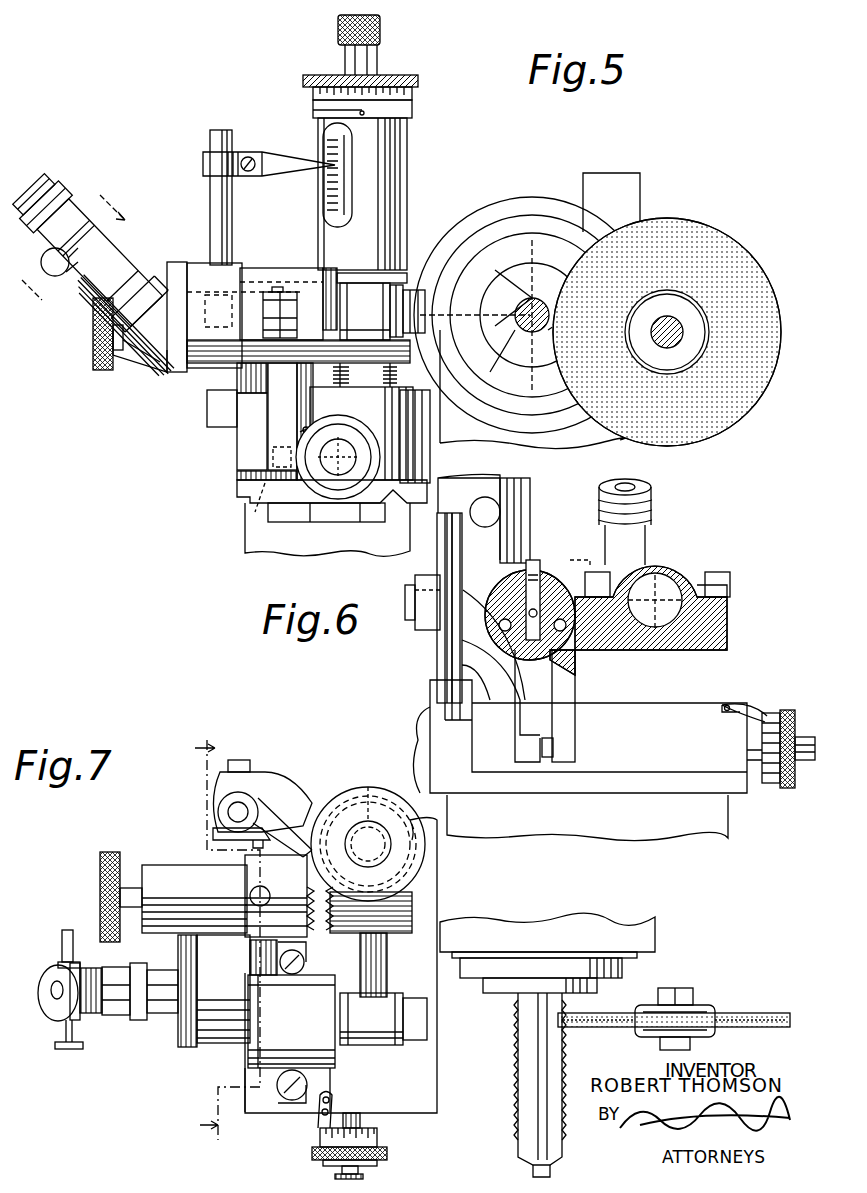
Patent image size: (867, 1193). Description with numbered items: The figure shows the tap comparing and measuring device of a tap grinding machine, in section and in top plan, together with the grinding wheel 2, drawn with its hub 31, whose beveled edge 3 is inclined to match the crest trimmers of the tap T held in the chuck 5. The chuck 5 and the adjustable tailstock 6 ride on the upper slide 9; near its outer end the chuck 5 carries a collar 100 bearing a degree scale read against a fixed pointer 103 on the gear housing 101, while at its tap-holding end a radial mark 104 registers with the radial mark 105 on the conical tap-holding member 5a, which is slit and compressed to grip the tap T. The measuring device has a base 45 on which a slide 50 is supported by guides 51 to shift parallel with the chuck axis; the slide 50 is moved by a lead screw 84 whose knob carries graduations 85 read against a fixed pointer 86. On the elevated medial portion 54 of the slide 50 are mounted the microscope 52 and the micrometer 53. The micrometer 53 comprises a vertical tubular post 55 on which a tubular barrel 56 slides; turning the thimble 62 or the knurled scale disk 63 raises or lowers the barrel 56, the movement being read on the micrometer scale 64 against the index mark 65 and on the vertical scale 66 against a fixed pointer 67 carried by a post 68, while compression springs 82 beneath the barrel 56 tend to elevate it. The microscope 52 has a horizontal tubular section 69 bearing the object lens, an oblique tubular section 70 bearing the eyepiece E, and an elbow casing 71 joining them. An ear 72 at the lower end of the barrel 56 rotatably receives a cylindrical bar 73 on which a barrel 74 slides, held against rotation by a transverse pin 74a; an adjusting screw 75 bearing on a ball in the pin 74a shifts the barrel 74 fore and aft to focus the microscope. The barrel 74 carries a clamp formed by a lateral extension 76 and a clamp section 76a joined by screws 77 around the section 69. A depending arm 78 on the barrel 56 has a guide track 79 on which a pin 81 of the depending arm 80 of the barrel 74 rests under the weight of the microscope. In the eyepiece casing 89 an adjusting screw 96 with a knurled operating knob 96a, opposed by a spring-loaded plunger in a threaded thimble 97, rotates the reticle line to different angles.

In FIG. 5, the abrasive disk or wheel 2 is at (657, 225).
In FIG. 7, the abrasive disk or wheel 2 is at (735, 1014).
In FIG. 7, the beveled edge 3 is at (786, 1014).
In FIG. 5, the tap-supporting chuck 5 is at (512, 255).
In FIG. 6, the tap-supporting chuck 5 is at (530, 490).
In FIG. 7, the tap-supporting chuck 5 is at (630, 950).
In FIG. 7, the conical tap-holding member 5a is at (598, 988).
In FIG. 7, the adjustable tailstock 6 is at (227, 938).
In FIG. 5, the upper slide 9 is at (78, 252).
In FIG. 5, the wheel hub 31 is at (672, 330).
In FIG. 7, the wheel hub 31 is at (690, 1037).
In FIG. 5, the base 45 is at (274, 542).
In FIG. 6, the base 45 is at (728, 800).
In FIG. 5, the slide 50 is at (240, 488).
In FIG. 6, the slide 50 is at (733, 790).
In FIG. 7, the slide 50 is at (430, 1103).
In FIG. 5, the guides 51 is at (380, 535).
In FIG. 5, the microscope 52 is at (180, 262).
In FIG. 6, the microscope 52 is at (655, 512).
In FIG. 5, the micrometer 53 is at (420, 128).
In FIG. 5, the elevated medial portion 54 is at (418, 445).
In FIG. 5, the vertical tubular post 55 is at (365, 378).
In FIG. 6, the tubular barrel 56 is at (530, 530).
In FIG. 7, the tubular barrel 56 is at (379, 785).
In FIG. 5, the thimble 62 is at (378, 54).
In FIG. 7, the thimble 62 is at (372, 840).
In FIG. 5, the knurled scale disk 63 is at (305, 78).
In FIG. 5, the micrometer scale 64 is at (314, 93).
In FIG. 7, the micrometer scale 64 is at (352, 795).
In FIG. 5, the index mark 65 is at (358, 110).
In FIG. 5, the vertical scale 66 is at (322, 186).
In FIG. 5, the fixed pointer 67 is at (278, 160).
In FIG. 7, the fixed pointer 67 is at (282, 830).
In FIG. 5, the post 68 is at (222, 220).
In FIG. 7, the post 68 is at (245, 800).
In FIG. 5, the tubular section 69 is at (382, 311).
In FIG. 6, the tubular section 69 is at (680, 625).
In FIG. 7, the tubular section 69 is at (383, 1019).
In FIG. 5, the oblique tubular section 70 is at (118, 248).
In FIG. 7, the oblique tubular section 70 is at (128, 1000).
In FIG. 5, the elbow casing 71 is at (200, 362).
In FIG. 7, the elbow casing 71 is at (218, 1030).
In FIG. 5, the ear 72 is at (360, 280).
In FIG. 6, the ear 72 is at (540, 578).
In FIG. 7, the ear 72 is at (412, 905).
In FIG. 6, the cylindrical bar 73 is at (500, 610).
In FIG. 7, the cylindrical bar 73 is at (305, 880).
In FIG. 6, the barrel 74 is at (510, 600).
In FIG. 7, the barrel 74 is at (168, 875).
In FIG. 6, the transverse pin 74a is at (580, 660).
In FIG. 7, the transverse pin 74a is at (255, 890).
In FIG. 5, the adjusting screw 75 is at (124, 350).
In FIG. 7, the adjusting screw 75 is at (128, 888).
In FIG. 5, the lateral extension 76 is at (262, 345).
In FIG. 6, the lateral extension 76 is at (645, 648).
In FIG. 7, the lateral extension 76 is at (258, 957).
In FIG. 5, the clamp section 76a is at (262, 272).
In FIG. 6, the clamp section 76a is at (700, 575).
In FIG. 7, the clamp section 76a is at (272, 1100).
In FIG. 5, the screws 77 is at (282, 290).
In FIG. 6, the screws 77 is at (595, 570).
In FIG. 7, the screws 77 is at (306, 962).
In FIG. 5, the depending arm 78 is at (245, 428).
In FIG. 6, the depending arm 78 is at (515, 692).
In FIG. 5, the guide track 79 is at (250, 460).
In FIG. 6, the guide track 79 is at (540, 742).
In FIG. 5, the depending arm 80 is at (300, 440).
In FIG. 6, the depending arm 80 is at (575, 720).
In FIG. 5, the pin 81 is at (252, 510).
In FIG. 6, the pin 81 is at (555, 745).
In FIG. 5, the compression springs 82 is at (340, 385).
In FIG. 6, the lead screw 84 is at (766, 718).
In FIG. 7, the lead screw 84 is at (350, 1113).
In FIG. 5, the graduations 85 is at (310, 478).
In FIG. 6, the graduations 85 is at (785, 780).
In FIG. 7, the graduations 85 is at (382, 1140).
In FIG. 5, the fixed pointer 86 is at (305, 428).
In FIG. 6, the fixed pointer 86 is at (735, 703).
In FIG. 7, the fixed pointer 86 is at (320, 1130).
In FIG. 5, the casing 89 is at (92, 212).
In FIG. 7, the casing 89 is at (95, 1020).
In FIG. 7, the adjusting screw 96 is at (68, 1050).
In FIG. 5, the knurled operating knob 96a is at (60, 277).
In FIG. 7, the threaded thimble 97 is at (73, 950).
In FIG. 5, the collar 100 is at (488, 208).
In FIG. 5, the gear housing 101 is at (525, 208).
In FIG. 5, the fixed pointer 103 is at (452, 215).
In FIG. 5, the radial mark 104 is at (532, 258).
In FIG. 5, the radial mark 105 is at (565, 265).
In FIG. 7, the radial mark 105 is at (540, 990).
In FIG. 7, the eyepiece E is at (55, 1000).
In FIG. 7, the tap T is at (522, 1062).